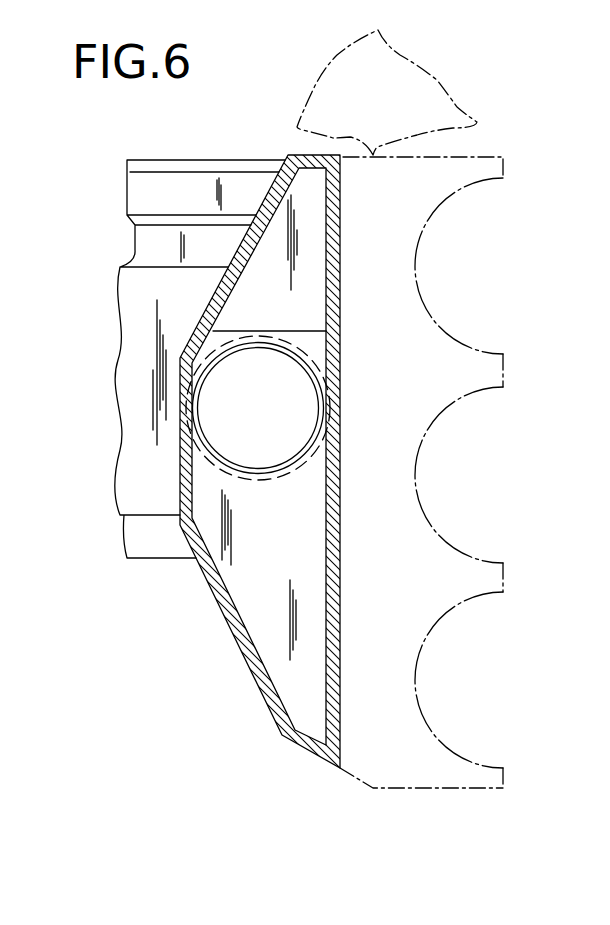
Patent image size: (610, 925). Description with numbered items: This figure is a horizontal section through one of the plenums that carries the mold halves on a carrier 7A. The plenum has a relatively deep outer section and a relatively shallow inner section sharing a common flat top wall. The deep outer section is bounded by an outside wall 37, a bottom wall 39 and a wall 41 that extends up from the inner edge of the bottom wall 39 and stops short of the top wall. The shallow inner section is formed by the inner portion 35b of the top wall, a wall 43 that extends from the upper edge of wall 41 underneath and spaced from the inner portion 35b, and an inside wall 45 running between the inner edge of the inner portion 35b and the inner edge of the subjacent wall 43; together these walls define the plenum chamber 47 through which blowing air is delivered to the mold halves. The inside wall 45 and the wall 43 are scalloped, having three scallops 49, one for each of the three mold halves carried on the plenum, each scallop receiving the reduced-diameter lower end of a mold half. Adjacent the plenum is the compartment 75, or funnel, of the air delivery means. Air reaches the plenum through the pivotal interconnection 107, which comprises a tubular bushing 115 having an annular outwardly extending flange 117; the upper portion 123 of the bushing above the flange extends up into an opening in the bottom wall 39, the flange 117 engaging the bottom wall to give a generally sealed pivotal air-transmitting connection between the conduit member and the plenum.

The carrier 7A is at (323, 68).
The inner portion of the top wall 35b is at (457, 788).
The outside wall 37 is at (238, 650).
The bottom wall 39 is at (302, 271).
The wall 41 is at (341, 566).
The wall 43 is at (556, 785).
The inside wall 45 is at (504, 362).
The plenum chamber 47 is at (278, 577).
The scallops 49 is at (414, 267).
The compartment 75 is at (187, 192).
The pivotal interconnection 107 is at (298, 307).
The tubular bushing 115 is at (326, 432).
The annular outwardly extending flange 117 is at (254, 494).
The upper portion of the bushing 123 is at (283, 441).